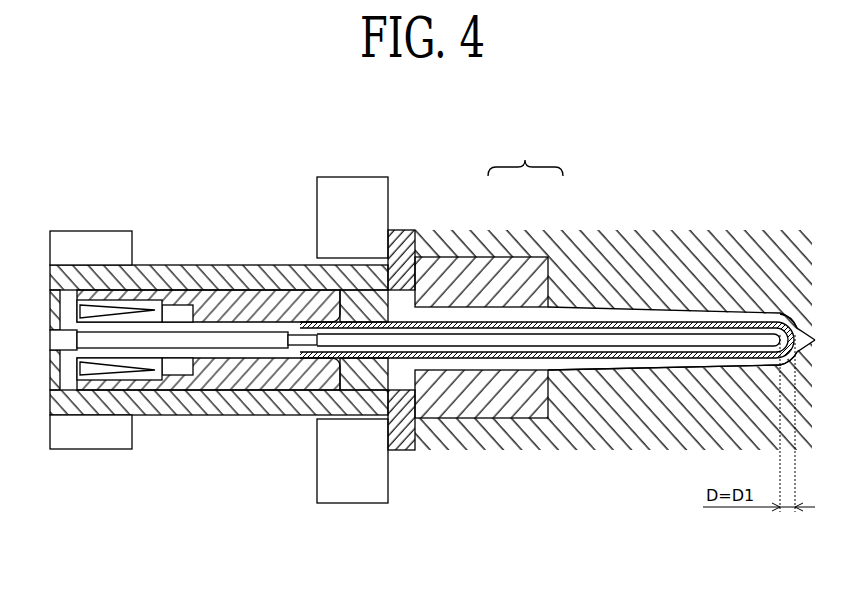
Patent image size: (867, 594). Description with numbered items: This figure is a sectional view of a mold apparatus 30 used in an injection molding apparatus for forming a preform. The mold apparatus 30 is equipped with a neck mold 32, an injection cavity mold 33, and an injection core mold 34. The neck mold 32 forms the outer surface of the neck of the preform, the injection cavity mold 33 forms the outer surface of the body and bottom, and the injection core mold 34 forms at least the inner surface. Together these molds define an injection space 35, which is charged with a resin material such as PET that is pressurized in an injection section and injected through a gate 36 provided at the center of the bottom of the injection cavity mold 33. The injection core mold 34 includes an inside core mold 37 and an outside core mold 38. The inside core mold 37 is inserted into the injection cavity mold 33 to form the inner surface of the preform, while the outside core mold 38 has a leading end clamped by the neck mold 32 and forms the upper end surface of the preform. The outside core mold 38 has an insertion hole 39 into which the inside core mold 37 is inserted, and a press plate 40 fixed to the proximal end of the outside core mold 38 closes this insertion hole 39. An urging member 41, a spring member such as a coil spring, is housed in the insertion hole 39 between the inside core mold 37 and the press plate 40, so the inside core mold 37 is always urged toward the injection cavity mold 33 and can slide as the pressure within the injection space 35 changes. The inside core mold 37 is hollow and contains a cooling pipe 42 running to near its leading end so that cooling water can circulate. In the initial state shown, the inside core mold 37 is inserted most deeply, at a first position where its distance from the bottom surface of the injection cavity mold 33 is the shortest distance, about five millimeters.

The mold apparatus 30 is at (684, 118).
The neck mold 32 is at (410, 232).
The injection cavity mold 33 is at (617, 247).
The injection core mold 34 is at (525, 157).
The injection space 35 is at (625, 364).
The gate 36 is at (790, 328).
The inside core mold 37 is at (590, 322).
The outside core mold 38 is at (486, 262).
The insertion hole 39 is at (262, 268).
The press plate 40 is at (78, 262).
The urging member 41 is at (150, 305).
The cooling pipe 42 is at (282, 398).